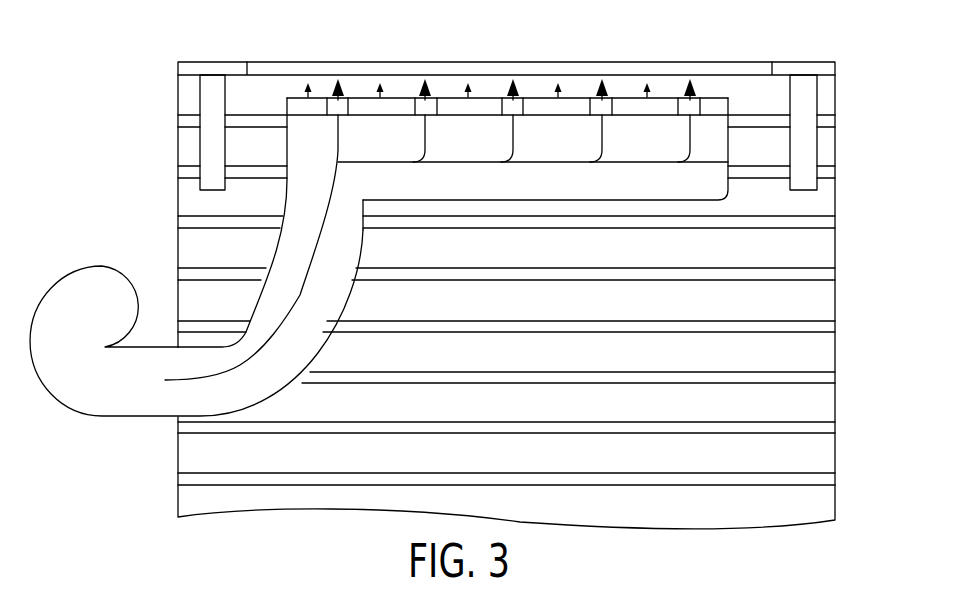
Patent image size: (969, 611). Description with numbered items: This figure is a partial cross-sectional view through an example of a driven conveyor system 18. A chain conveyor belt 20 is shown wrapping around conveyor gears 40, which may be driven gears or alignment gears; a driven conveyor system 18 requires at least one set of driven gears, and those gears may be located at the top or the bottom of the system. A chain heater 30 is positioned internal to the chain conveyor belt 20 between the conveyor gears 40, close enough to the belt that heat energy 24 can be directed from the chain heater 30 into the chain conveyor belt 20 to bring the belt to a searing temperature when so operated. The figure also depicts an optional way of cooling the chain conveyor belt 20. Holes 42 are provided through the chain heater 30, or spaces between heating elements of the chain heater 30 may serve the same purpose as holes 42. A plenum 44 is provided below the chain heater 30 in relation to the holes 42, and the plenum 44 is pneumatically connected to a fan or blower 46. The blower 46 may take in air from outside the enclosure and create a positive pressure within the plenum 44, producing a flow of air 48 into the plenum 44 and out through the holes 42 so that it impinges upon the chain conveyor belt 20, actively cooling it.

The driven conveyor system 18 is at (880, 156).
The chain conveyor belt 20 is at (827, 275).
The heat energy 24 is at (303, 97).
The chain heater 30 is at (736, 90).
The conveyor gears 40 is at (208, 110).
The holes 42 is at (344, 108).
The plenum 44 is at (712, 188).
The blower 46 is at (100, 268).
The flow of air 48 is at (320, 242).